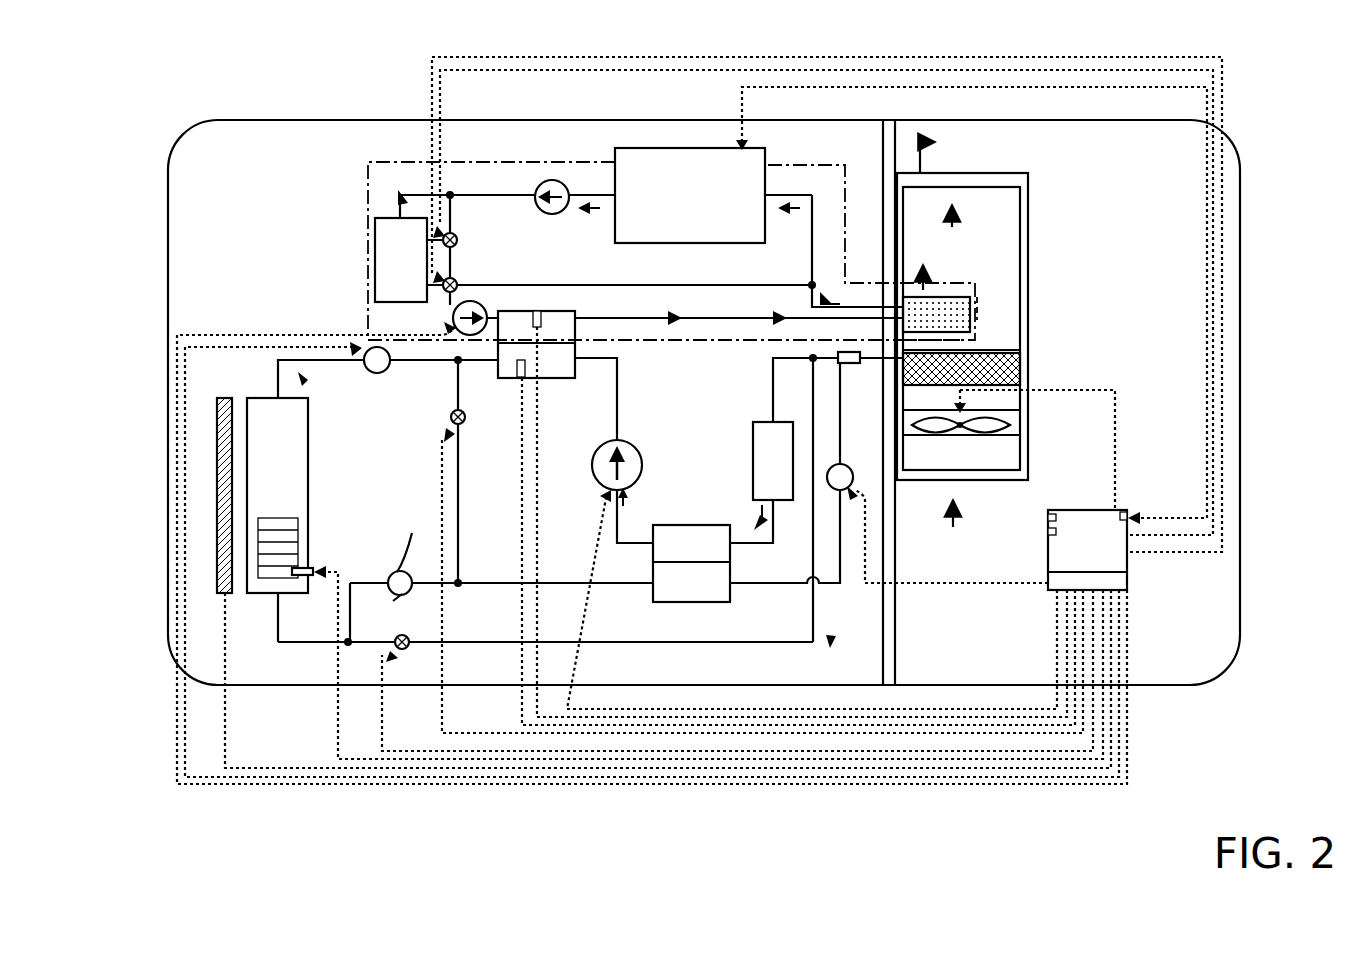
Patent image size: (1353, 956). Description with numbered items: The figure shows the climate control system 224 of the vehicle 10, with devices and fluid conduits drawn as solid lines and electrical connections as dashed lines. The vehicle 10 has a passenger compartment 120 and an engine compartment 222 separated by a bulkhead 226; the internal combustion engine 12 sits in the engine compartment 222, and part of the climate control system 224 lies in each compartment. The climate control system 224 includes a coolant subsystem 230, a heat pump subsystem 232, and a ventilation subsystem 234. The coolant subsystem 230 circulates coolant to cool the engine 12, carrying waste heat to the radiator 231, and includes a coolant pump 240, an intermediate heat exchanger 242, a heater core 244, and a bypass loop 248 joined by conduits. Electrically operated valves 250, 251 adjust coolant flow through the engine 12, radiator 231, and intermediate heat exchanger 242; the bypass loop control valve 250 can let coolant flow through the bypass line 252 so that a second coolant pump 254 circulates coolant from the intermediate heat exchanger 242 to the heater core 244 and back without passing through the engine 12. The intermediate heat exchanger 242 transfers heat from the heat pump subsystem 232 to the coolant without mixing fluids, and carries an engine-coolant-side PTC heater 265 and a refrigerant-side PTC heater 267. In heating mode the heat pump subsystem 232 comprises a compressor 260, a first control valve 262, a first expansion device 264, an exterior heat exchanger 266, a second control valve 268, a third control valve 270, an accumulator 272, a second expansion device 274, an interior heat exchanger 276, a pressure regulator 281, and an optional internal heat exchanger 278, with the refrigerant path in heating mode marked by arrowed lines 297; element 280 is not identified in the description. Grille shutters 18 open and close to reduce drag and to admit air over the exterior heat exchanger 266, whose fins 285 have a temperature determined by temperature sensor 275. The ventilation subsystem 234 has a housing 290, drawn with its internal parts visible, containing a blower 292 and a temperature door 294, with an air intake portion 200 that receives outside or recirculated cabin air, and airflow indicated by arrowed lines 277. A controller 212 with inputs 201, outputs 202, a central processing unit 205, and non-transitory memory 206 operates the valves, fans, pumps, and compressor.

The vehicle 10 is at (185, 128).
The internal combustion engine 12 is at (690, 195).
The grille shutters 18 is at (224, 398).
The passenger compartment 120 is at (1163, 304).
The air intake portion 200 is at (960, 455).
The inputs 201 is at (1128, 512).
The outputs 202 is at (1115, 580).
The central processing unit 205 is at (1048, 532).
The non-transitory memory 206 is at (1048, 518).
The controller 212 is at (1087, 550).
The engine compartment 222 is at (275, 189).
The climate control system 224 is at (392, 142).
The bulkhead 226 is at (897, 630).
The coolant subsystem 230 is at (366, 185).
The radiator 231 is at (495, 246).
The heat pump subsystem 232 is at (338, 300).
The ventilation subsystem 234 is at (1036, 190).
The coolant pump 240 is at (556, 215).
The intermediate heat exchanger 242 is at (527, 311).
The heater core 244 is at (957, 297).
The bypass loop 248 is at (766, 276).
The bypass loop control valve 250 is at (457, 285).
The electrically operated valve 251 is at (458, 240).
The bypass line 252 is at (672, 284).
The second coolant pump 254 is at (482, 304).
The compressor 260 is at (630, 448).
The first control valve 262 is at (452, 420).
The first expansion device 264 is at (377, 373).
The PTC heater 265 is at (548, 311).
The exterior heat exchanger 266 is at (277, 520).
The refrigerant side PTC heater 267 is at (520, 377).
The second control valve 268 is at (501, 576).
The third control valve 270 is at (402, 635).
The accumulator 272 is at (795, 429).
The second expansion device 274 is at (848, 468).
The temperature sensor 275 is at (313, 568).
The interior heat exchanger 276 is at (1022, 365).
The arrowed lines 277 is at (925, 165).
The internal heat exchanger 278 is at (746, 546).
The refrigerant line 280 is at (458, 365).
The pressure regulator 281 is at (838, 357).
The fins 285 is at (268, 648).
The housing 290 is at (1030, 470).
The blower 292 is at (1018, 428).
The temperature door 294 is at (978, 336).
The arrowed lines 297 is at (301, 380).